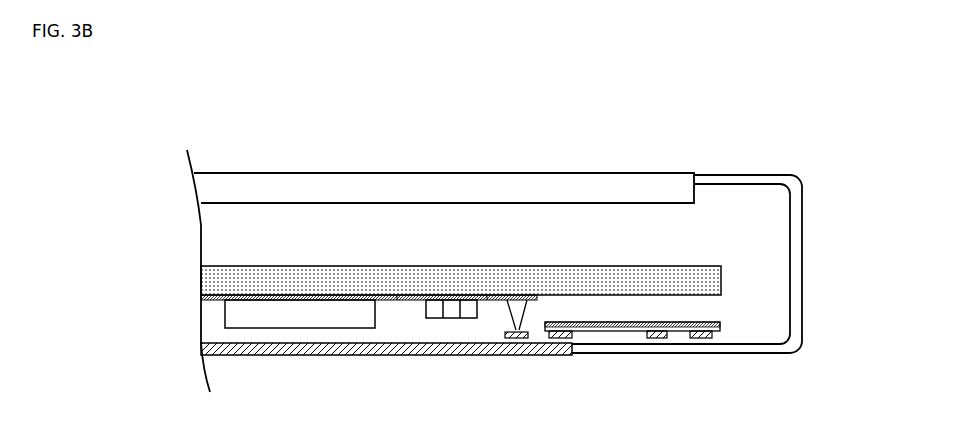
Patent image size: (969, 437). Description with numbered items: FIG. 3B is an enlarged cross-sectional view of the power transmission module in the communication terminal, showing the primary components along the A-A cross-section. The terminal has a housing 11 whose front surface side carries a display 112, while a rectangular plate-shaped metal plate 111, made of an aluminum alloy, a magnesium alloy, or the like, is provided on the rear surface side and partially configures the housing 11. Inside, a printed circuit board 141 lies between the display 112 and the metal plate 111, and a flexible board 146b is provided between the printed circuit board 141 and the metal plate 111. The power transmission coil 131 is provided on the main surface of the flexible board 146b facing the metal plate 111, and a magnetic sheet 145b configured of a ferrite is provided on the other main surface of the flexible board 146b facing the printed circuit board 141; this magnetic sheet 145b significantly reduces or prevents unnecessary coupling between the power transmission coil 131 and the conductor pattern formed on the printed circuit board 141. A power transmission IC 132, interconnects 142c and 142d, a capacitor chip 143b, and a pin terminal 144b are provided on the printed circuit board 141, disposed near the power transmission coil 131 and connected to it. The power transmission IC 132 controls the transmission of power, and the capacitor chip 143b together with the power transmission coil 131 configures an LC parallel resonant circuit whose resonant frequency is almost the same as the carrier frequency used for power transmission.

The housing 11 is at (757, 175).
The display 112 is at (410, 173).
The printed circuit board 141 is at (721, 282).
The power transmission IC 132 is at (328, 328).
The capacitor chip 143b is at (450, 318).
The pin terminal 144b is at (521, 322).
The magnetic sheet 145b is at (713, 321).
The power transmission coil 131 is at (697, 338).
The flexible board 146b is at (718, 333).
The metal plate 111 is at (248, 355).
The interconnect 142c is at (397, 298).
The interconnect 142d is at (487, 297).